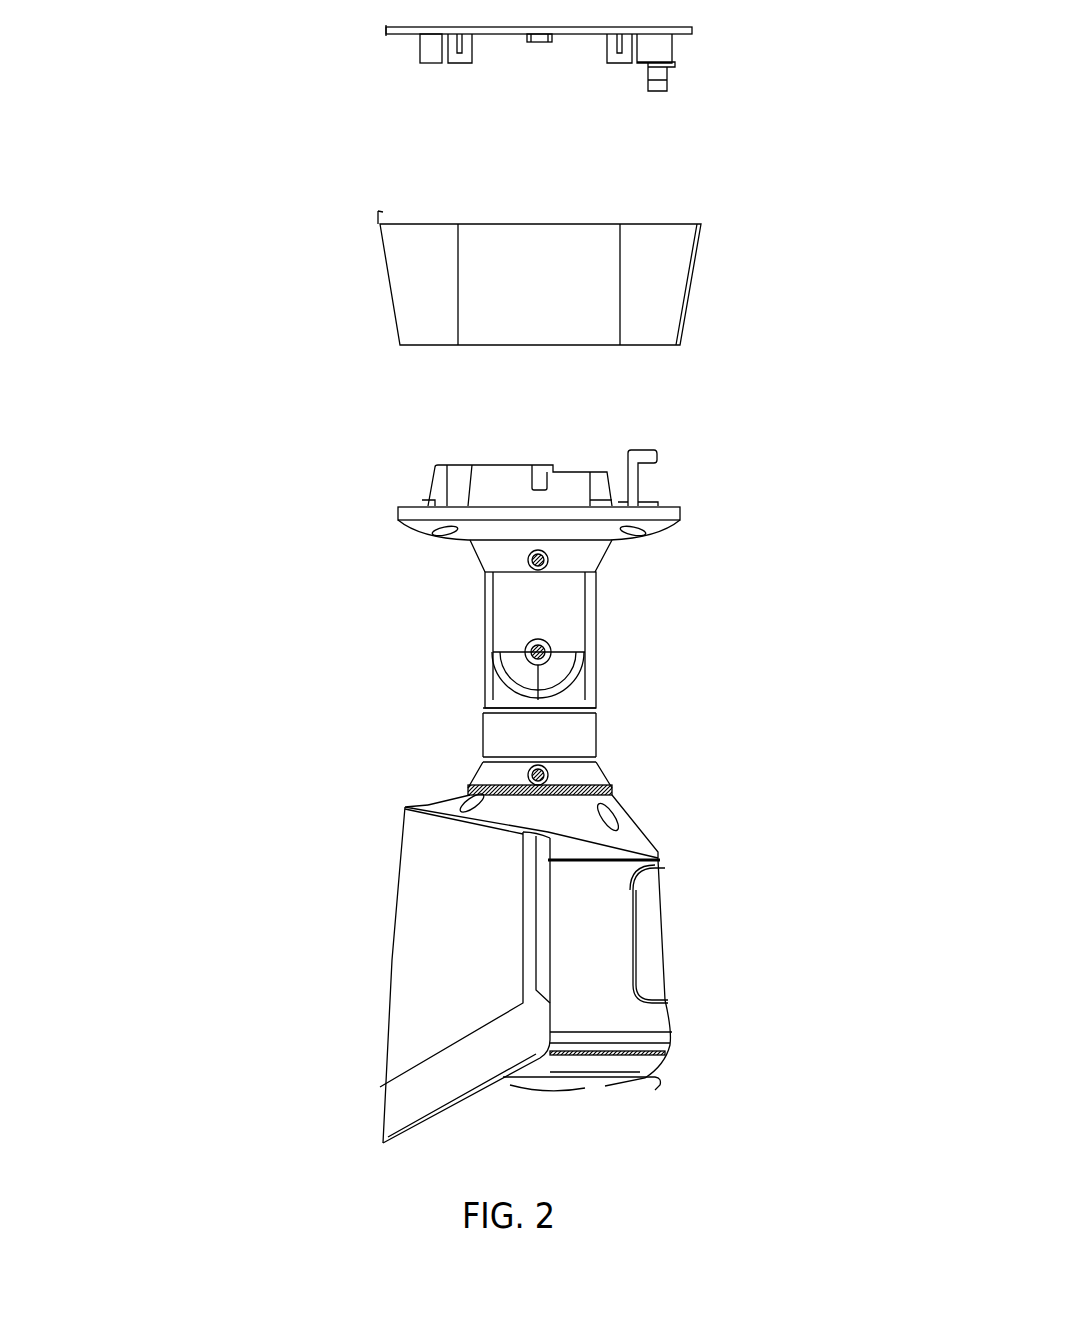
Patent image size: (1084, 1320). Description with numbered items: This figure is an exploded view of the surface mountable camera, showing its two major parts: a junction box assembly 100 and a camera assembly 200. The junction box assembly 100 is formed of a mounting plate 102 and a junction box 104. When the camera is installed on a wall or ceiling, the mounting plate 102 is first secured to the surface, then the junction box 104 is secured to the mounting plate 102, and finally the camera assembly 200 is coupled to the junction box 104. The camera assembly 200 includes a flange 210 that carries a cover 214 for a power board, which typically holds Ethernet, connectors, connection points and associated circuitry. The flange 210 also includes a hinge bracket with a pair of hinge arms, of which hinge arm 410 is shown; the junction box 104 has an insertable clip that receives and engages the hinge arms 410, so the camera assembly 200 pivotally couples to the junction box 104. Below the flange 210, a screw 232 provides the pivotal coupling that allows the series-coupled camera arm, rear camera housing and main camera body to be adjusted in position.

The junction box assembly 100 is at (307, 368).
The mounting plate 102 is at (692, 31).
The junction box 104 is at (701, 238).
The camera assembly 200 is at (307, 1146).
The cover 214 is at (460, 465).
The hinge arm 410 is at (645, 470).
The flange 210 is at (663, 530).
The screw 232 is at (526, 650).